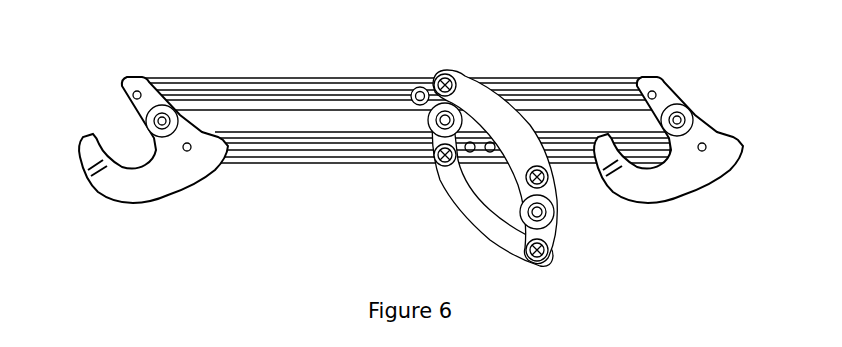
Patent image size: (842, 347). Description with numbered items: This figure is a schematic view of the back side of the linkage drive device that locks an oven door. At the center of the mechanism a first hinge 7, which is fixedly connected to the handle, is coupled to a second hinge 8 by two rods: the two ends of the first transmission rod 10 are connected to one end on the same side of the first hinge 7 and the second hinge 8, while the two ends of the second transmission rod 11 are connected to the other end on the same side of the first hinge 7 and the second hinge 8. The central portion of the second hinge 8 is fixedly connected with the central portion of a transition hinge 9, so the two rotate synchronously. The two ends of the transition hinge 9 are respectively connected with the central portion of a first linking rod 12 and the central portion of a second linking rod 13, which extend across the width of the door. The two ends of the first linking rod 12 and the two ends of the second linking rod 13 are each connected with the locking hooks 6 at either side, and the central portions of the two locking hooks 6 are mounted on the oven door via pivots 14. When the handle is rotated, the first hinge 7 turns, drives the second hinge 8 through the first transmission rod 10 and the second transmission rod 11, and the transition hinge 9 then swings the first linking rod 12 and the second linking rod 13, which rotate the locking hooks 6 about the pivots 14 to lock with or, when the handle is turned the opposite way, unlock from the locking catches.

The locking hook 6 is at (150, 186).
The first hinge 7 is at (552, 227).
The second hinge 8 is at (421, 86).
The transition hinge 9 is at (429, 116).
The first transmission rod 10 is at (504, 118).
The second transmission rod 11 is at (478, 206).
The first linking rod 12 is at (308, 92).
The second linking rod 13 is at (280, 156).
The pivot 14 is at (163, 104).